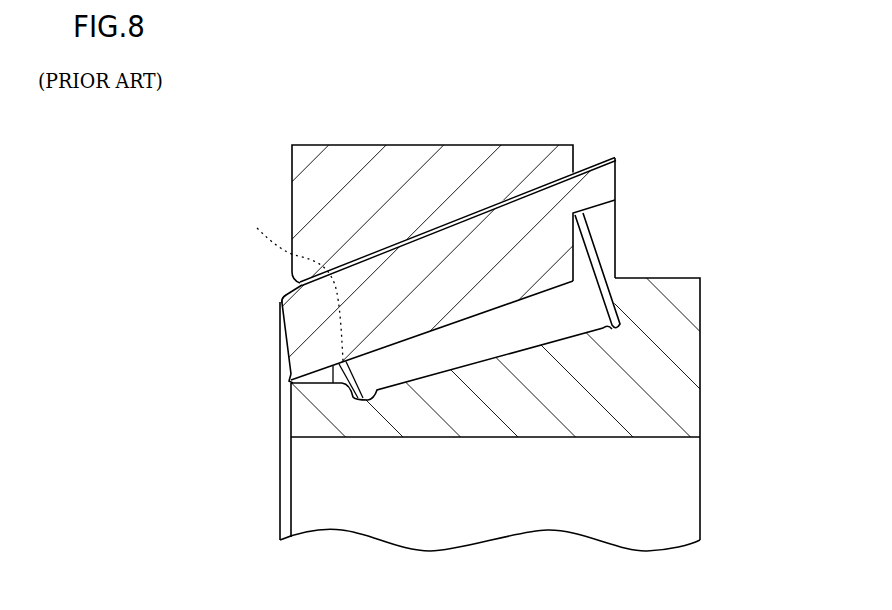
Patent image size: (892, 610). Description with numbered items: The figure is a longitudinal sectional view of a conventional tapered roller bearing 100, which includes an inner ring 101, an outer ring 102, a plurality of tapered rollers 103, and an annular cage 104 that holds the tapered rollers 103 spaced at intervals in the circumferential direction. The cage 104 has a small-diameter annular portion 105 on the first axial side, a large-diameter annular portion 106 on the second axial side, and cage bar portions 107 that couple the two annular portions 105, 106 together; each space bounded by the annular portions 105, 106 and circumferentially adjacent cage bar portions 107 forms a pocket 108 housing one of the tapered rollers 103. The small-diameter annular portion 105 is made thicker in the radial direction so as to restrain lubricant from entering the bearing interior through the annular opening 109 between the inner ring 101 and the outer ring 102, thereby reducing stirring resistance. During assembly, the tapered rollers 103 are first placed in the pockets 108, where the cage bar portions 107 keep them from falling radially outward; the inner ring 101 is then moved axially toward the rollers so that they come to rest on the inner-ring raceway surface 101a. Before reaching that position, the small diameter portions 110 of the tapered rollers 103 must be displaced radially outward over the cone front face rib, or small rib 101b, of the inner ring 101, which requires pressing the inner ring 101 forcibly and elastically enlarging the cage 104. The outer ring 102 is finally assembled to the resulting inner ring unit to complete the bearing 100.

The tapered roller bearing 100 is at (438, 251).
The inner ring 101 is at (536, 415).
The inner-ring raceway surface 101a is at (440, 372).
The cone front face rib (small rib) 101b is at (320, 394).
The outer ring 102 is at (339, 162).
The tapered roller 103 is at (555, 328).
The annular cage 104 is at (284, 296).
The small-diameter annular portion 105 is at (298, 322).
The large-diameter annular portion 106 is at (598, 182).
The cage bar portion 107 is at (422, 255).
The pocket 108 is at (518, 220).
The annular opening 109 is at (294, 383).
The small diameter portion 110 is at (289, 285).